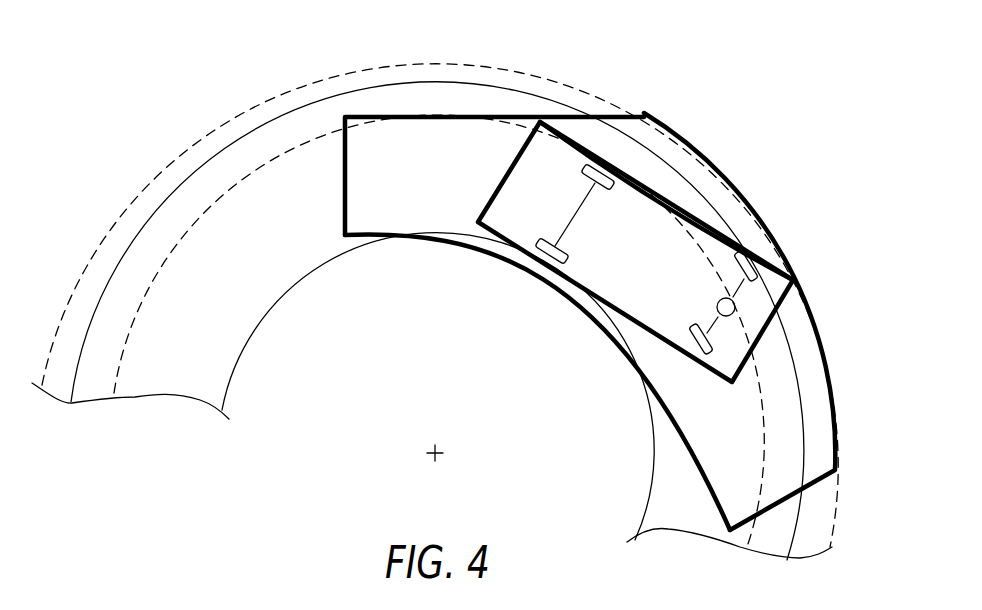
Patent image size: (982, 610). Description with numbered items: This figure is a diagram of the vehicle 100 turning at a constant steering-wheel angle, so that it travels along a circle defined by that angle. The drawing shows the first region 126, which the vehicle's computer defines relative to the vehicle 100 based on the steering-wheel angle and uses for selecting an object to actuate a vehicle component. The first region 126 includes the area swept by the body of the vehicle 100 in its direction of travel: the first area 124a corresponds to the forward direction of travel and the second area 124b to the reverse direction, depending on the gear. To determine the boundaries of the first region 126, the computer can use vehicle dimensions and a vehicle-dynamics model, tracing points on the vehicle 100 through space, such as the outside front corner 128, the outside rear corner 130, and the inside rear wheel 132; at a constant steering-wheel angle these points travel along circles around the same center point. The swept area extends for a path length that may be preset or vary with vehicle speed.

The vehicle 100 is at (673, 258).
The first area 124a is at (623, 167).
The second area 124b is at (432, 148).
The first region 126 is at (423, 210).
The outside front corner 128 is at (793, 280).
The outside rear corner 130 is at (537, 115).
The inside rear wheel 132 is at (540, 272).